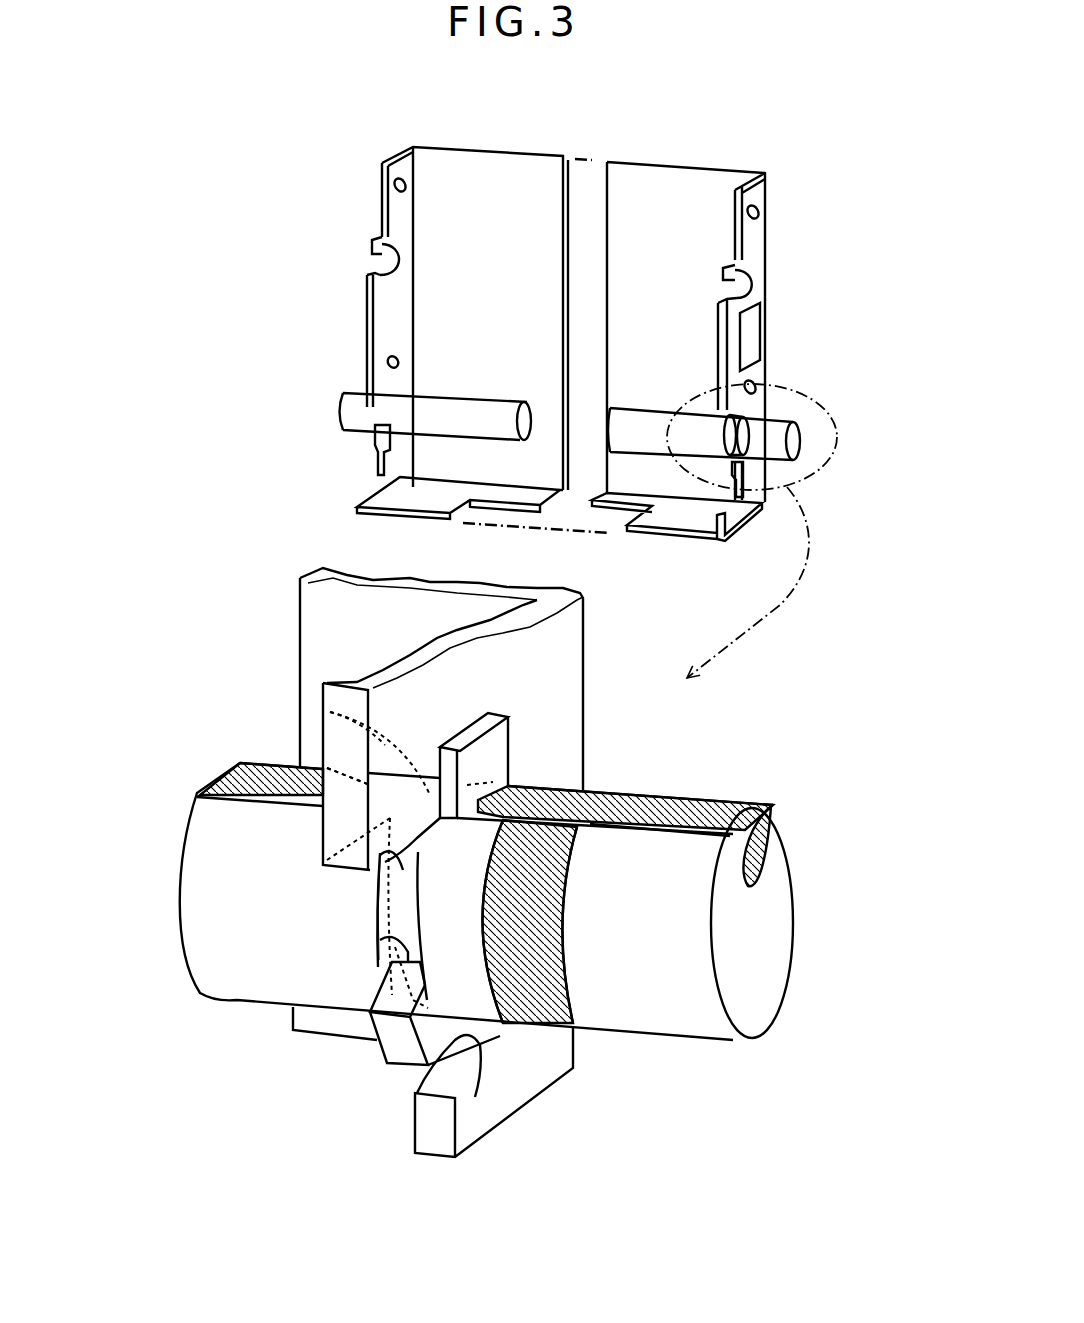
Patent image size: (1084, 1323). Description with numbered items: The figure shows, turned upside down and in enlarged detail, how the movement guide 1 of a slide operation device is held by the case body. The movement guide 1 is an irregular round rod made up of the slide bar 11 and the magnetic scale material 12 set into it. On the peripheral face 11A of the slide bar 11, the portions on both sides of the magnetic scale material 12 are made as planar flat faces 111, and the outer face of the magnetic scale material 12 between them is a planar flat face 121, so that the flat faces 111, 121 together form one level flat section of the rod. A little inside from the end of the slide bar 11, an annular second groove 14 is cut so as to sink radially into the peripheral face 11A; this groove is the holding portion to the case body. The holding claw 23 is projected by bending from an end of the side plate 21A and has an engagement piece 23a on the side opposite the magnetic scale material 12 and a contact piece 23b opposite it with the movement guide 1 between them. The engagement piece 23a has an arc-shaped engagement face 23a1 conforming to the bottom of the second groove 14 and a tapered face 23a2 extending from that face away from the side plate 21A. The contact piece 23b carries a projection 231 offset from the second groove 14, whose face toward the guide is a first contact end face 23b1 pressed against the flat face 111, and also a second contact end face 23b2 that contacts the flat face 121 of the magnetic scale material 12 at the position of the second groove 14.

The movement guide 1 is at (815, 442).
The slide bar 11 is at (753, 980).
The peripheral face 11A is at (367, 423).
The magnetic scale material 12 is at (750, 850).
The second groove 14 is at (410, 908).
The side plate 21A is at (715, 239).
The holding claw 23 is at (358, 382).
The engagement piece 23a is at (742, 462).
The engagement face 23a1 is at (380, 937).
The tapered face 23a2 is at (382, 1008).
The contact piece 23b is at (745, 425).
The first contact end face 23b1 is at (320, 763).
The second contact end face 23b2 is at (380, 884).
The flat face 111 is at (513, 790).
The flat face 121 is at (320, 713).
The projection 231 is at (493, 747).